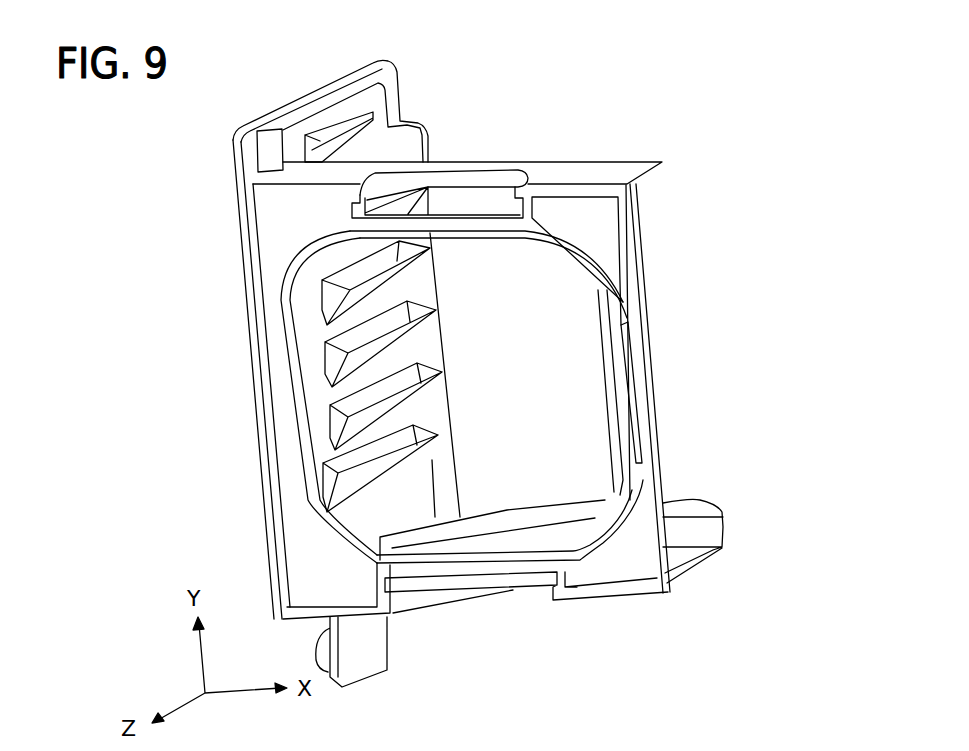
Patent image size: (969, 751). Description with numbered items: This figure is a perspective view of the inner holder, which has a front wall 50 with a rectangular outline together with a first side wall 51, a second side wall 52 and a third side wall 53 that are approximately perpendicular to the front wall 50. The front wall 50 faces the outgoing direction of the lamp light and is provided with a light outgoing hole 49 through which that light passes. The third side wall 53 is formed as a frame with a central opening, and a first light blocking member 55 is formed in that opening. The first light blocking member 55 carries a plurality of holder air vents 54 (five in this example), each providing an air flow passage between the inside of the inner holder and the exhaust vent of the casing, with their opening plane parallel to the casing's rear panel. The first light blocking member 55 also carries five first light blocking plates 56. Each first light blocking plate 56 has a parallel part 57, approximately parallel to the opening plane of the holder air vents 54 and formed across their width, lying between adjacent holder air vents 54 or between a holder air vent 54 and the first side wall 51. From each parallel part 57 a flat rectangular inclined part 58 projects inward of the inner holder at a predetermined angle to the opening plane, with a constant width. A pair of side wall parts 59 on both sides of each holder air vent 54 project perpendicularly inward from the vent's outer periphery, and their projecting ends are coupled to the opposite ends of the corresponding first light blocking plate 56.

The light outgoing hole 49 is at (592, 297).
The front wall 50 is at (262, 217).
The first side wall 51 is at (700, 572).
The second side wall 52 is at (583, 167).
The third side wall 53 is at (322, 90).
The holder air vent 54 is at (345, 265).
The first light blocking member 55 is at (278, 270).
The first light blocking plate 56 is at (221, 295).
The parallel part 57 is at (335, 340).
The inclined part 58 is at (322, 306).
The side wall part 59 is at (417, 238).